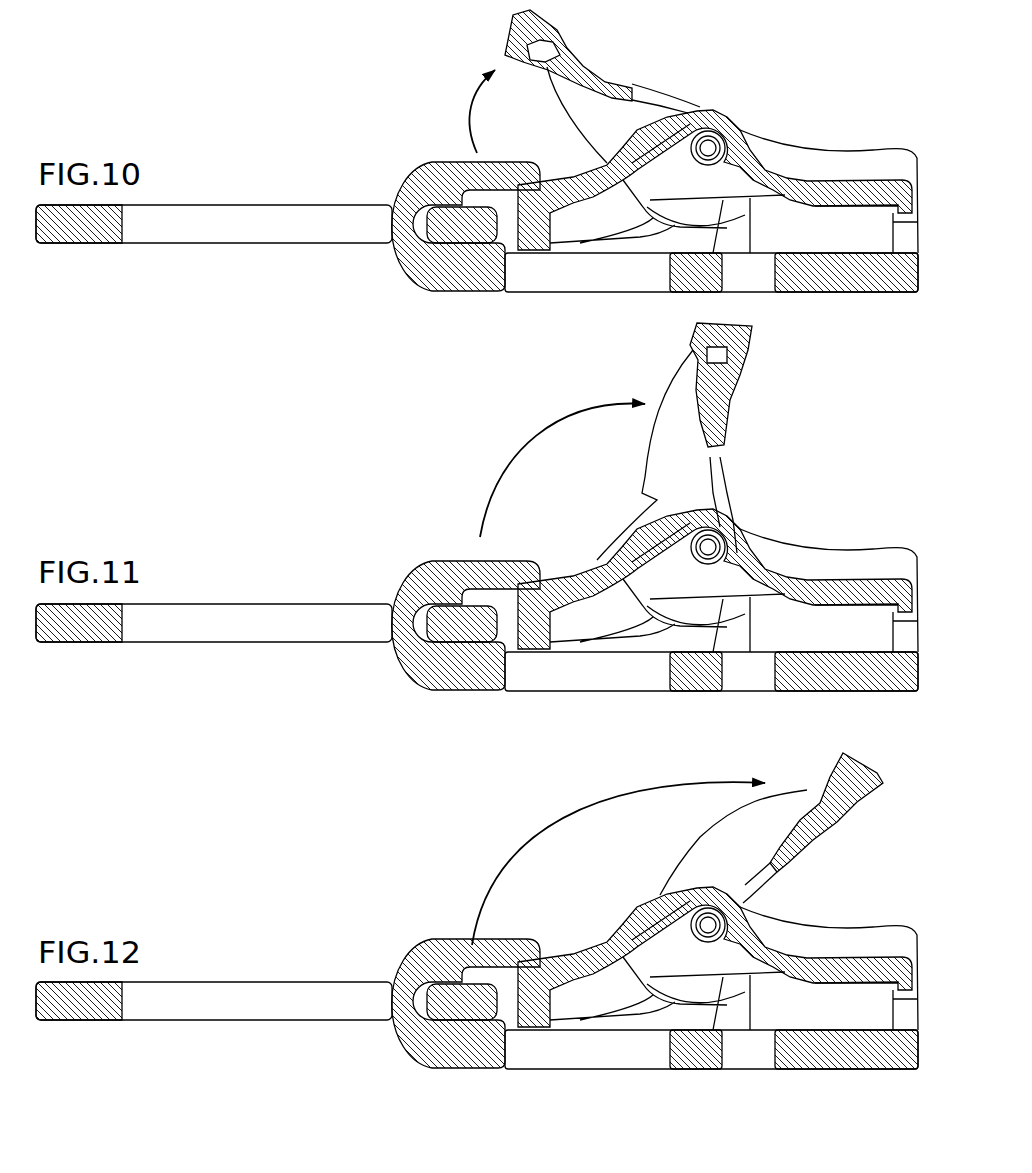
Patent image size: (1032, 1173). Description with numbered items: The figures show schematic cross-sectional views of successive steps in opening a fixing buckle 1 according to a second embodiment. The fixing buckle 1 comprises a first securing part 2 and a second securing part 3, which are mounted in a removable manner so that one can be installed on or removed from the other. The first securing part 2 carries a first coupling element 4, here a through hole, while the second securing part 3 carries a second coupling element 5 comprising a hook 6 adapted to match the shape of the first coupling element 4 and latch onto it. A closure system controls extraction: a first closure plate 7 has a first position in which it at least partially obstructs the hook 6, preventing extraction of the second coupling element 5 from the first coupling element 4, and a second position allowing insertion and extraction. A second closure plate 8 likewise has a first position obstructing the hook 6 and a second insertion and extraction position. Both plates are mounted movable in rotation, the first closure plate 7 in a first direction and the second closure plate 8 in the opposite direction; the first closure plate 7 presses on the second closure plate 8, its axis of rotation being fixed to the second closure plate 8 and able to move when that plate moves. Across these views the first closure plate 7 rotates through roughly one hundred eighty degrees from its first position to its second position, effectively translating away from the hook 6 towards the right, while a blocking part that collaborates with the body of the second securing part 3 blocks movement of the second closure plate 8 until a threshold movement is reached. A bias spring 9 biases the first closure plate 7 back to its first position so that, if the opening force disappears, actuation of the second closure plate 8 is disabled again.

In FIG. 10, the fixing buckle 1 is at (220, 110).
In FIG. 11, the fixing buckle 1 is at (356, 480).
In FIG. 12, the fixing buckle 1 is at (356, 903).
In FIG. 10, the first securing part 2 is at (72, 242).
In FIG. 11, the first securing part 2 is at (72, 641).
In FIG. 12, the first securing part 2 is at (72, 1020).
In FIG. 10, the second securing part 3 is at (905, 296).
In FIG. 11, the second securing part 3 is at (822, 694).
In FIG. 12, the second securing part 3 is at (872, 1071).
In FIG. 10, the first coupling element 4 is at (450, 325).
In FIG. 11, the first coupling element 4 is at (212, 697).
In FIG. 12, the first coupling element 4 is at (222, 960).
In FIG. 10, the second coupling element 5 is at (383, 156).
In FIG. 10, the hook 6 is at (385, 258).
In FIG. 11, the hook 6 is at (395, 657).
In FIG. 12, the hook 6 is at (397, 1045).
In FIG. 10, the first closure plate 7 is at (577, 50).
In FIG. 11, the first closure plate 7 is at (730, 440).
In FIG. 12, the first closure plate 7 is at (810, 828).
In FIG. 10, the second closure plate 8 is at (532, 249).
In FIG. 11, the second closure plate 8 is at (532, 650).
In FIG. 12, the second closure plate 8 is at (532, 1027).
In FIG. 10, the bias spring 9 is at (692, 165).
In FIG. 11, the bias spring 9 is at (692, 565).